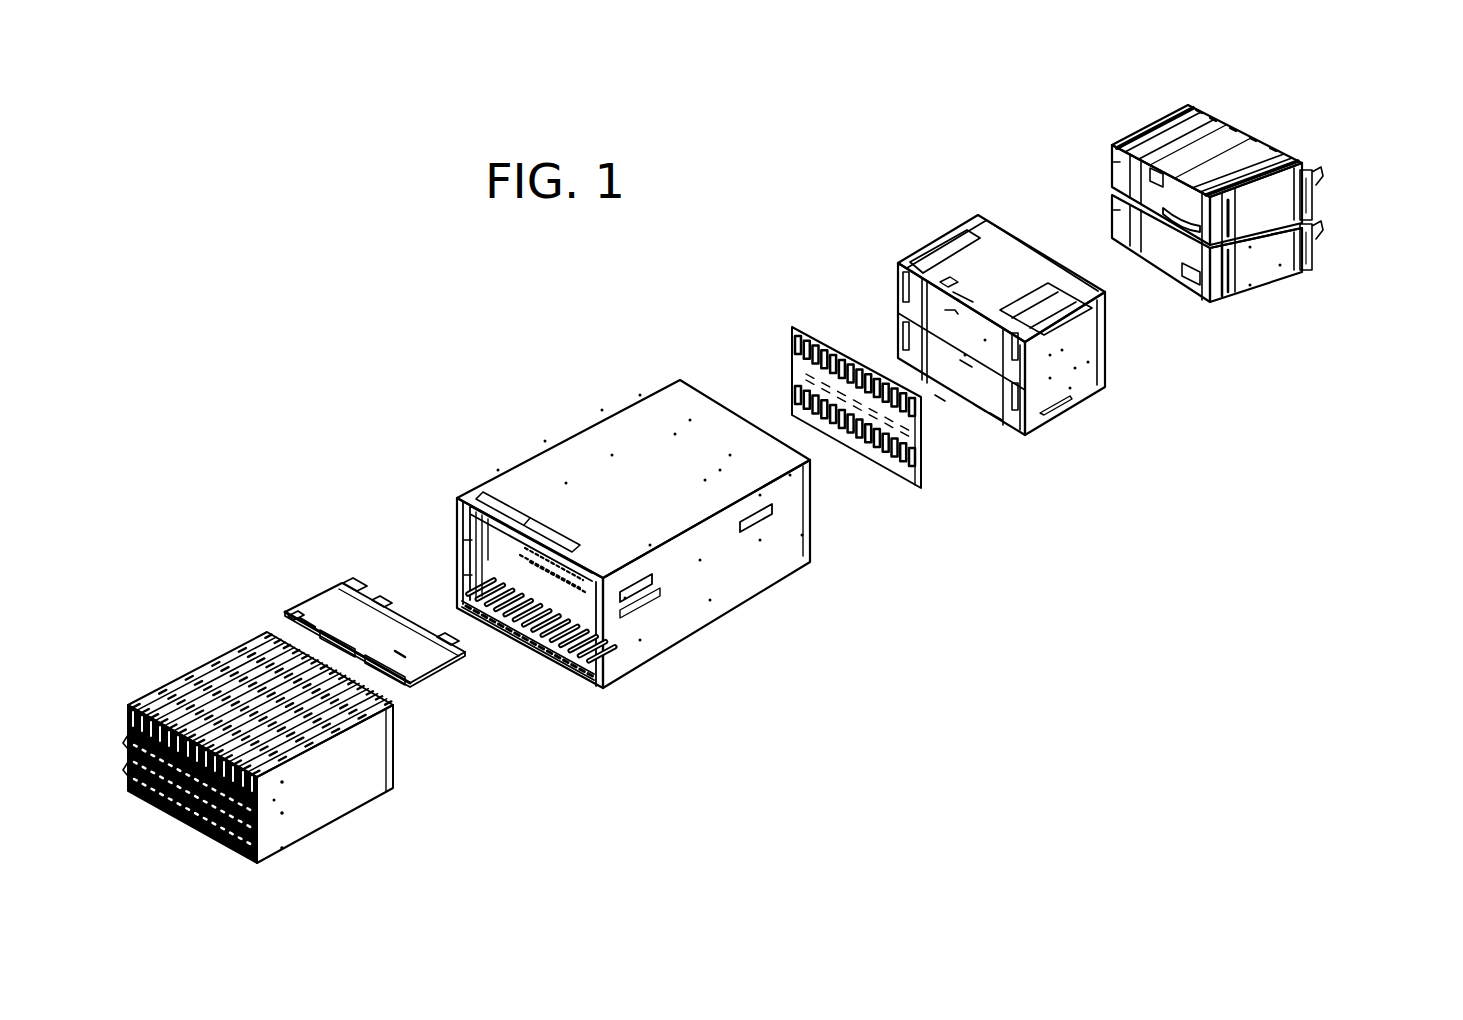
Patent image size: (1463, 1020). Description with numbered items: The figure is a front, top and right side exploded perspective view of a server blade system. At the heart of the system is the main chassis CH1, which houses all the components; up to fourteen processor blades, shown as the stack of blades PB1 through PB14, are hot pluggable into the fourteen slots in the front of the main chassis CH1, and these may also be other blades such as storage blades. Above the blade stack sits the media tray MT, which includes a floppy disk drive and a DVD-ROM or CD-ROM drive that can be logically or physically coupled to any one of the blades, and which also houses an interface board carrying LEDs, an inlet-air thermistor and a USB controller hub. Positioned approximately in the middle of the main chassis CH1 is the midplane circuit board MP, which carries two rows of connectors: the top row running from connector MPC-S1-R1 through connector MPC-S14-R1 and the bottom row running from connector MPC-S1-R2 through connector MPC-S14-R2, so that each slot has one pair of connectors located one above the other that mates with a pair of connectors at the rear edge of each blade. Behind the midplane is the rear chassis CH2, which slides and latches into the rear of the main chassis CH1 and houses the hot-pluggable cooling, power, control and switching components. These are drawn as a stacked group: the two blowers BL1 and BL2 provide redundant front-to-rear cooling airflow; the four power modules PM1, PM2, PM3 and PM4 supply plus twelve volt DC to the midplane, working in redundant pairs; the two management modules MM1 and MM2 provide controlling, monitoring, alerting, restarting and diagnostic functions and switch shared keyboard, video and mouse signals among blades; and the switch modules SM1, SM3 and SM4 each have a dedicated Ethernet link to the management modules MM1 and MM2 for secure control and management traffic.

The processor blade PB1 is at (200, 667).
The processor blade PB14 is at (298, 807).
The media tray MT is at (320, 592).
The main chassis CH1 is at (547, 452).
The midplane circuit board MP is at (792, 327).
The midplane connector MPC-S1-R1 is at (792, 347).
The midplane connector MPC-S1-R2 is at (787, 393).
The midplane connector MPC-S14-R1 is at (917, 418).
The midplane connector MPC-S14-R2 is at (917, 477).
The chassis CH2 is at (937, 240).
The management module MM1 is at (1188, 103).
The management module MM2 is at (1110, 195).
The power module PM1 is at (1205, 108).
The power module PM2 is at (1110, 243).
The power module PM3 is at (1308, 162).
The power module PM4 is at (1207, 290).
The blower BL1 is at (1247, 140).
The blower BL2 is at (1155, 253).
The switch module SM1 is at (1310, 162).
The switch module SM3 is at (1312, 193).
The switch module SM4 is at (1288, 263).